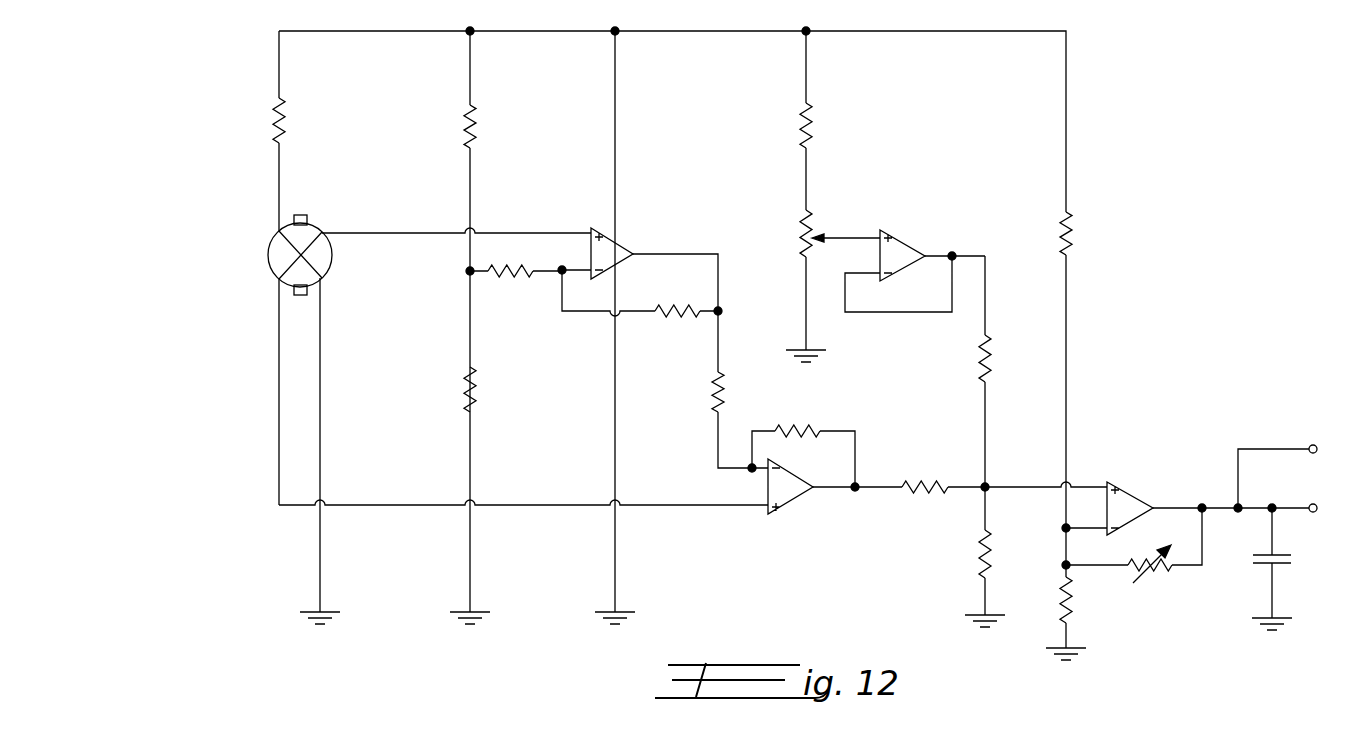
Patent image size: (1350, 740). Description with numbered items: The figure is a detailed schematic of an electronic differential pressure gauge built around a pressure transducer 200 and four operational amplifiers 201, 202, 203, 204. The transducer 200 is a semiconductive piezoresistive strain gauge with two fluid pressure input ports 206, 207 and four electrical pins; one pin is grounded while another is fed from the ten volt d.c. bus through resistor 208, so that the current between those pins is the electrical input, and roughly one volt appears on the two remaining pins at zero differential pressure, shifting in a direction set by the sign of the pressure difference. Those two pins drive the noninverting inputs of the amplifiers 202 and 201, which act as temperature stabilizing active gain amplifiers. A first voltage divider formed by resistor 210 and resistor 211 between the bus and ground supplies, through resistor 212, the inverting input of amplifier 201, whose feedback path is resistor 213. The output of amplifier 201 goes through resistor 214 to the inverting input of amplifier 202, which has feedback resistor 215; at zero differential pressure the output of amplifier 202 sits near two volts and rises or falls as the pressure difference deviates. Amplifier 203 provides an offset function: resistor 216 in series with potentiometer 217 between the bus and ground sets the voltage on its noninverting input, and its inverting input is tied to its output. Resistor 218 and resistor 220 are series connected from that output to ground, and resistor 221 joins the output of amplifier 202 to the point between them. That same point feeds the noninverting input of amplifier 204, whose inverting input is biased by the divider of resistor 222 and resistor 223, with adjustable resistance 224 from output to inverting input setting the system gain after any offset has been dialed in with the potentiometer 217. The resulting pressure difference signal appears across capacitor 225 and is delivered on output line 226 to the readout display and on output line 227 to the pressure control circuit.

The pressure transducer 200 is at (332, 258).
The operational amplifier 201 is at (623, 246).
The operational amplifier 202 is at (790, 513).
The operational amplifier 203 is at (900, 232).
The operational amplifier 204 is at (1123, 482).
The fluid pressure input port 206 is at (300, 215).
The fluid pressure input port 207 is at (300, 295).
The resistor 208 is at (283, 128).
The resistor 210 is at (468, 140).
The resistor 211 is at (472, 405).
The resistor 212 is at (508, 272).
The resistor 213 is at (672, 312).
The resistor 214 is at (716, 398).
The resistor 215 is at (788, 430).
The resistor 216 is at (812, 108).
The potentiometer 217 is at (800, 248).
The resistor 218 is at (982, 372).
The resistor 220 is at (980, 560).
The resistor 221 is at (908, 486).
The resistor 222 is at (1062, 245).
The resistor 223 is at (1070, 605).
The adjustable resistance 224 is at (1136, 575).
The capacitor 225 is at (1292, 560).
The output line 226 is at (1236, 480).
The output line 227 is at (1305, 506).